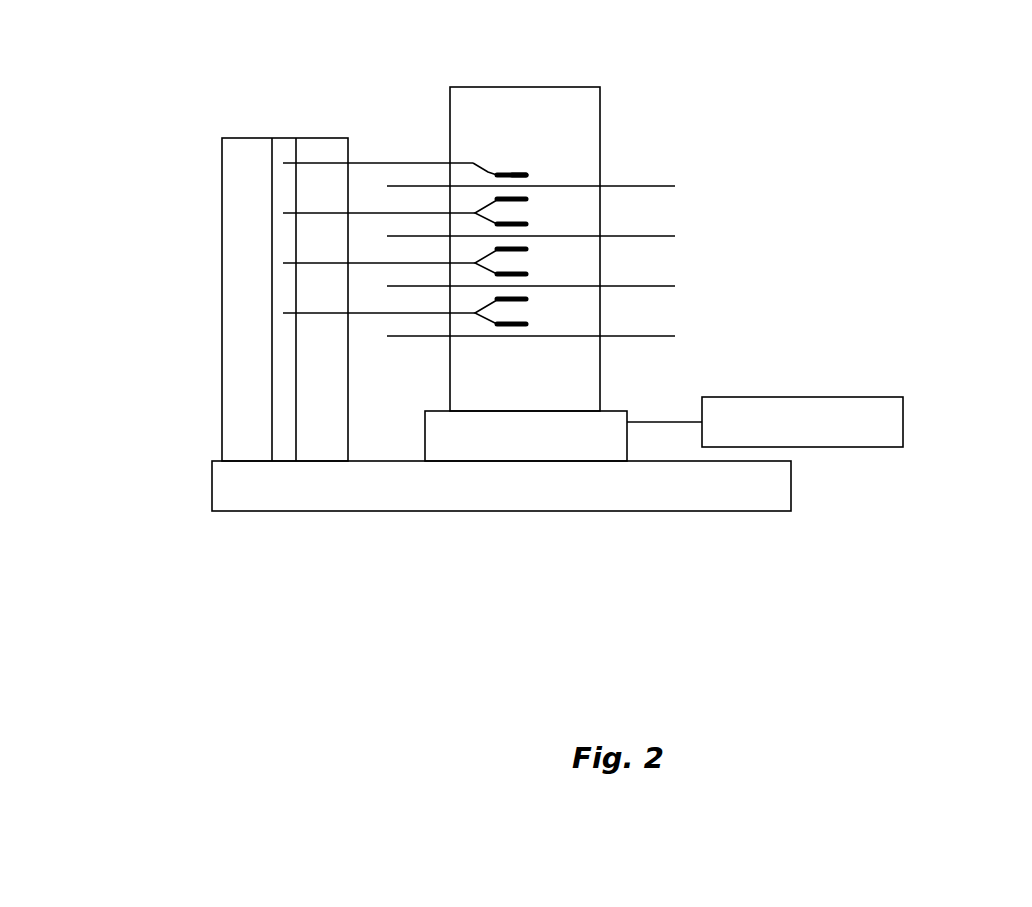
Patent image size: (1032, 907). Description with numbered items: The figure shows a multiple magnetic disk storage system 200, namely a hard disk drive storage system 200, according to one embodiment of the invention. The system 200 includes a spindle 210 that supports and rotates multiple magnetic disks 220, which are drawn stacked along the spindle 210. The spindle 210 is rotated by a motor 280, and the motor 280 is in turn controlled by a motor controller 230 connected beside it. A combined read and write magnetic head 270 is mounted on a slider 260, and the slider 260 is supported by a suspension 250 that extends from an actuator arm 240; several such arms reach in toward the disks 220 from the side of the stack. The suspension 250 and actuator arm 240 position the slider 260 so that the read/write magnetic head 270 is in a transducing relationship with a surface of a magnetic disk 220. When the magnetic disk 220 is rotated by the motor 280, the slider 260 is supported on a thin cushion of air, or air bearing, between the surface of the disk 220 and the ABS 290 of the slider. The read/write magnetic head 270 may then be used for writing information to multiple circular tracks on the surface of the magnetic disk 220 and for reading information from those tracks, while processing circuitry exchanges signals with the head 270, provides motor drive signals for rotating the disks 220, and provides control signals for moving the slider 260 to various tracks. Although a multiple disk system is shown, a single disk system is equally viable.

The magnetic disk storage system 200 is at (96, 590).
The spindle 210 is at (588, 83).
The magnetic disk 220 is at (637, 185).
The motor controller 230 is at (830, 396).
The actuator arm 240 is at (398, 162).
The suspension 250 is at (488, 162).
The slider 260 is at (515, 170).
The read/write magnetic head 270 is at (525, 327).
The motor 280 is at (616, 410).
The air bearing surface (ABS) 290 is at (520, 170).